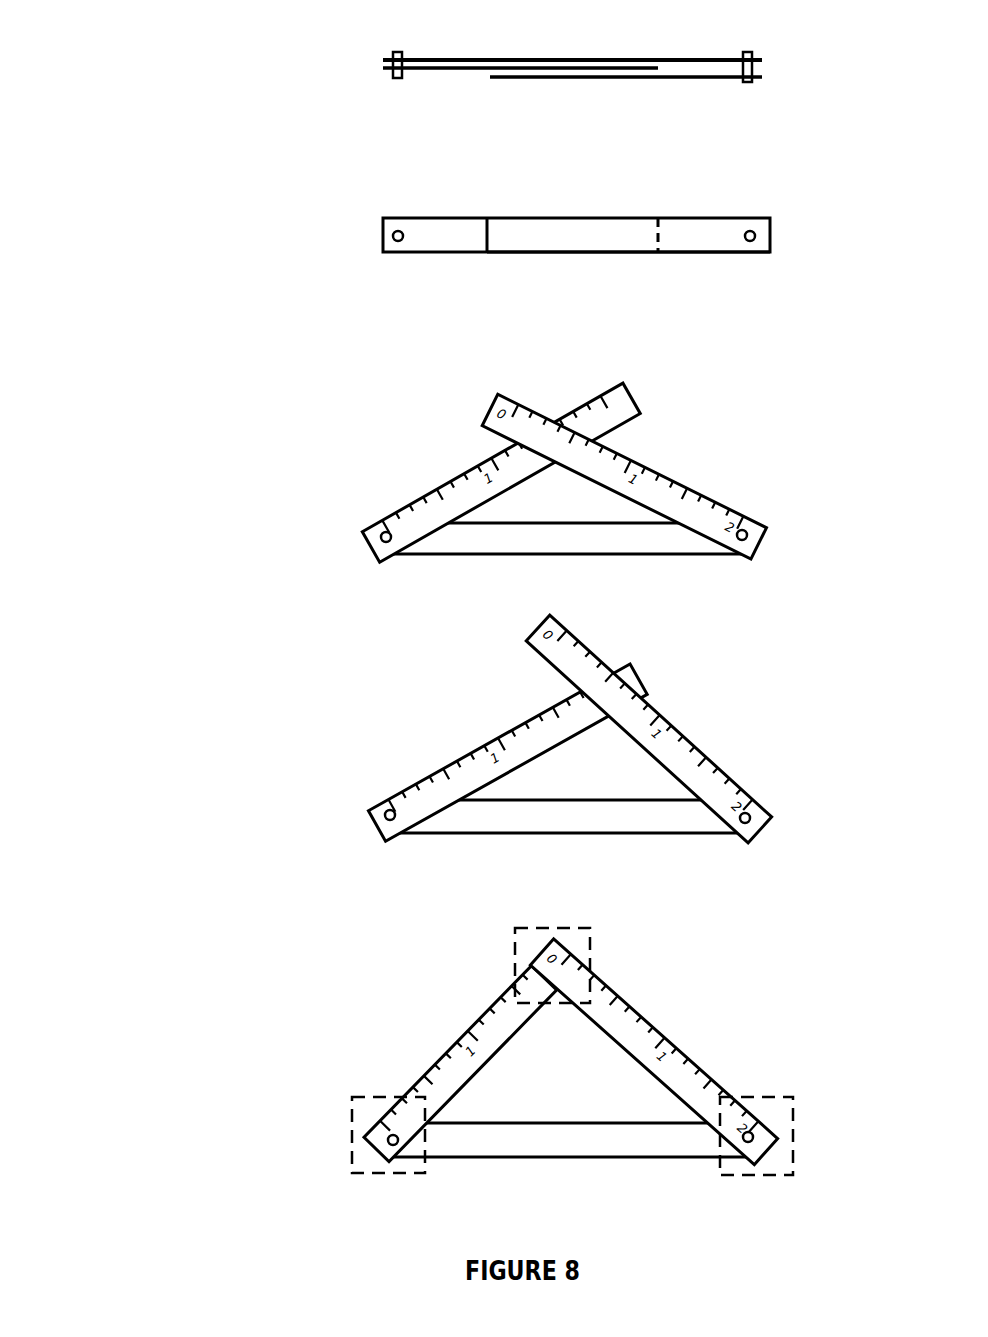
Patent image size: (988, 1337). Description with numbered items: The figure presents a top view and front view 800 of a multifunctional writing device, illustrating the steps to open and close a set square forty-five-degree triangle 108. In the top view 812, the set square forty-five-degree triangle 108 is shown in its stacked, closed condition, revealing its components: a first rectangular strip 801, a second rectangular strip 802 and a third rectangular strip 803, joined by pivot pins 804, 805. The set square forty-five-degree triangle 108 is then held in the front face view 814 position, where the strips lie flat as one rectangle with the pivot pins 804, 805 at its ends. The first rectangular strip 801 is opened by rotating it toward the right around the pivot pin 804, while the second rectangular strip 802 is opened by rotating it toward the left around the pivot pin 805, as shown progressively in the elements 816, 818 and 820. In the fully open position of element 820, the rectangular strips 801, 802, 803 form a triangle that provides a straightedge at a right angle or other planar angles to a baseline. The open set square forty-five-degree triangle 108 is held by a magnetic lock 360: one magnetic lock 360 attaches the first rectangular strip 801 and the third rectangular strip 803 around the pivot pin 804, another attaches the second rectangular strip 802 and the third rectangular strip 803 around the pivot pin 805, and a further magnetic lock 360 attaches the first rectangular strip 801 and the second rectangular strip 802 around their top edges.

The set square forty-five-degree triangle 108 is at (174, 600).
The first rectangular strip 801 is at (667, 621).
The second rectangular strip 802 is at (523, 615).
The third rectangular strip 803 is at (608, 613).
The pivot pin 804 is at (798, 622).
The pivot pin 805 is at (343, 621).
The magnetic lock 360 is at (574, 1051).
The top view and front view 800 is at (123, 1182).
The top view 812 is at (583, 121).
The front face view 814 is at (585, 292).
The element showing partially opened set square 816 is at (585, 589).
The element showing further opened set square 818 is at (592, 867).
The element showing fully open set square 820 is at (592, 1191).